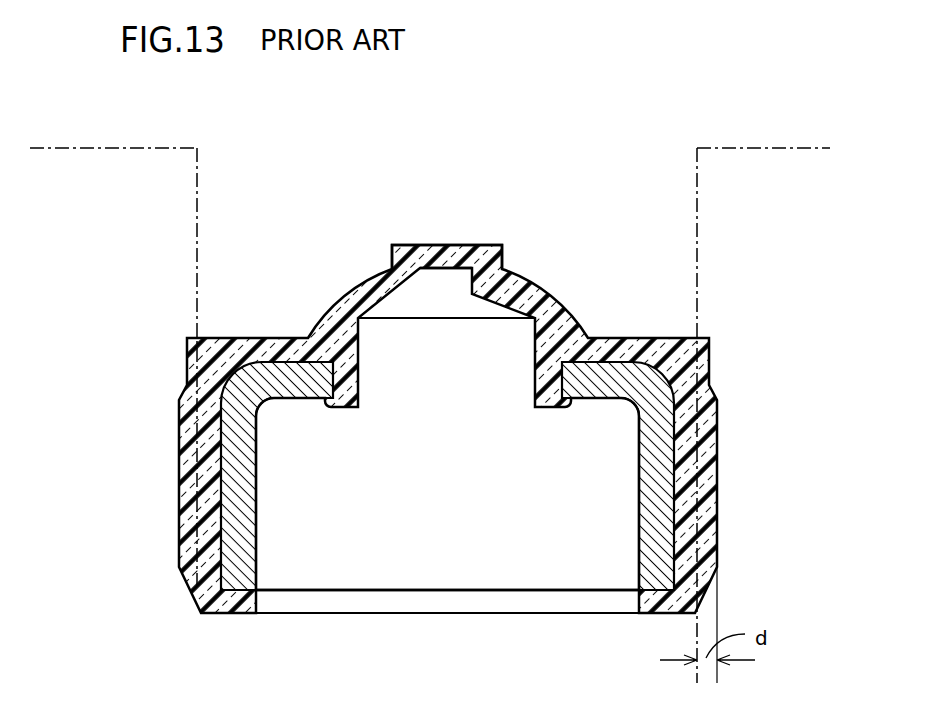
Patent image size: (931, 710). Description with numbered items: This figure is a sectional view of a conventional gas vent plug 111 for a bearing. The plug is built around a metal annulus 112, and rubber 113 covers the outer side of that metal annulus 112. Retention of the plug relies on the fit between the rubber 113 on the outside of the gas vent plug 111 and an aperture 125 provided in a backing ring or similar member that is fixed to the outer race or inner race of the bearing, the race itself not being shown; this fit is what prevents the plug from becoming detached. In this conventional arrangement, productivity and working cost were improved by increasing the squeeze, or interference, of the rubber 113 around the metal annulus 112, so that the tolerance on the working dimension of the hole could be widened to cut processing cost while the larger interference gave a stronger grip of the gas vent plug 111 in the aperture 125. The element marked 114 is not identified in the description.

The gas vent plug 111 is at (405, 337).
The metal annulus 112 is at (233, 520).
The rubber 113 is at (192, 464).
The sensor cap 114 is at (408, 245).
The aperture 125 is at (199, 194).